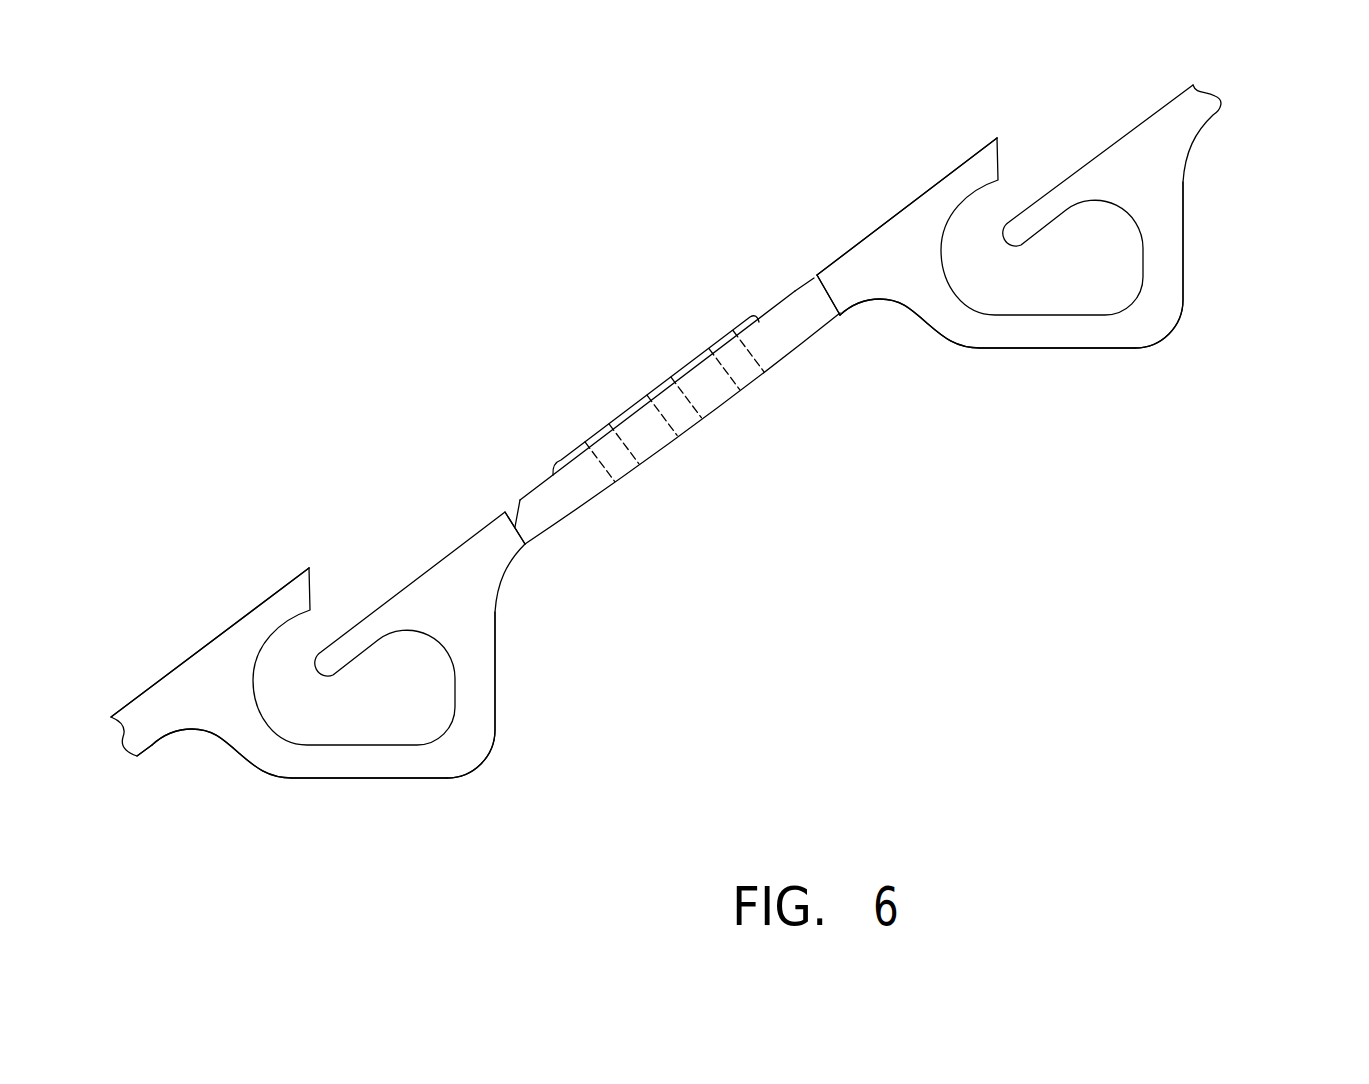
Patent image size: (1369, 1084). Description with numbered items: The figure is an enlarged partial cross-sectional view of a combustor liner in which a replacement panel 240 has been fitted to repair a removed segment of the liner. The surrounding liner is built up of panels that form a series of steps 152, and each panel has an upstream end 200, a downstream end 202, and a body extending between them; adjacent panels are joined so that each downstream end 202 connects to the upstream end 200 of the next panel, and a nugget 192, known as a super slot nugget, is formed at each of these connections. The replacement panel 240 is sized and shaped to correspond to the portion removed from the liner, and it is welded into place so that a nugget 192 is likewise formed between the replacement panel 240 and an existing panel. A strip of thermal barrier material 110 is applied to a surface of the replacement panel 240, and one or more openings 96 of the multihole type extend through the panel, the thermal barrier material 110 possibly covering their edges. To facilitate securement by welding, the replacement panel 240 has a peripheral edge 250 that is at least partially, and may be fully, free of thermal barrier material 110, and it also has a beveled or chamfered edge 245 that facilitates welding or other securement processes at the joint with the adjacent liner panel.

The step 152 is at (906, 160).
The upstream end 200 is at (1183, 252).
The downstream end 202 is at (949, 350).
The nugget 192 is at (1203, 370).
The replacement panel 240 is at (600, 531).
The peripheral edge 250 is at (533, 484).
The beveled or chamfered edge 245 is at (808, 290).
The thermal barrier material 110 is at (623, 412).
The opening 96 is at (723, 467).